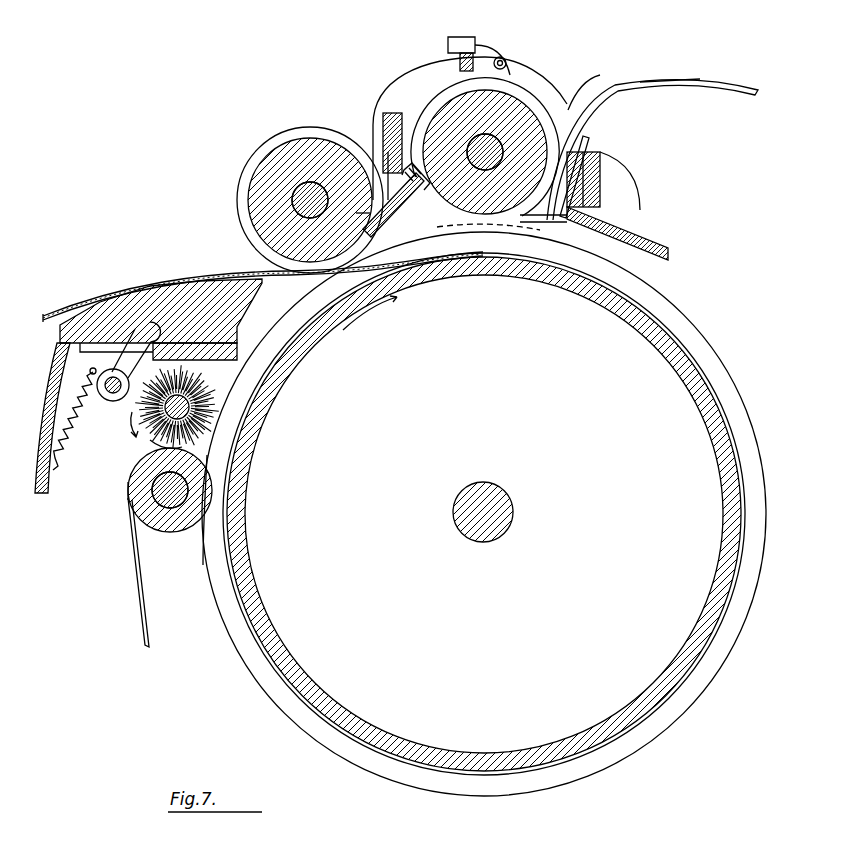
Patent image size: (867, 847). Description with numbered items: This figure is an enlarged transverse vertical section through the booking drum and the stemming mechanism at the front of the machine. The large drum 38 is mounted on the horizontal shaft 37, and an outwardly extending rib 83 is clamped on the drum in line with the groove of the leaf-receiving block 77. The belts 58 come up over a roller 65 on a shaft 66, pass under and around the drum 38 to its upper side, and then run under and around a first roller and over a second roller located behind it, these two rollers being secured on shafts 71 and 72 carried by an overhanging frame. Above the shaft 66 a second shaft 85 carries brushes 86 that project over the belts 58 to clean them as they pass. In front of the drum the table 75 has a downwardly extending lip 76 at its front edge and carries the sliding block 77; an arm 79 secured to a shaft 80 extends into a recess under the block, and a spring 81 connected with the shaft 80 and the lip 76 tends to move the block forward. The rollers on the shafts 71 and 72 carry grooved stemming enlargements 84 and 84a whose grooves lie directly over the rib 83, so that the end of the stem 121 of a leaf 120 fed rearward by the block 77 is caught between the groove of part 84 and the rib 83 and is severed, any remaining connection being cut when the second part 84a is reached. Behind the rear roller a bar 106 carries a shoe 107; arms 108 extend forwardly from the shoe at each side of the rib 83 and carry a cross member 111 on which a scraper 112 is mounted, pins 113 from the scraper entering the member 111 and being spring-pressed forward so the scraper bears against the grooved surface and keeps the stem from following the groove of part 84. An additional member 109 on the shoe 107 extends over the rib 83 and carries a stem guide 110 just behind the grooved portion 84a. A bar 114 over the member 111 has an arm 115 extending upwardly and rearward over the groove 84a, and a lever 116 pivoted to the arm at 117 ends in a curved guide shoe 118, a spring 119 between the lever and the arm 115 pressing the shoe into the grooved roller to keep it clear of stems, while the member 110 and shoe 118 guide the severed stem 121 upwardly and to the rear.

The shaft 37 is at (470, 532).
The drum 38 is at (253, 592).
The belts 58 is at (140, 605).
The roller 65 is at (168, 532).
The shaft 66 is at (128, 520).
The shaft 71 is at (292, 200).
The shaft 72 is at (491, 172).
The table 75 is at (237, 363).
The lip 76 is at (47, 477).
The block 77 is at (238, 325).
The arm 79 is at (137, 337).
The shaft 80 is at (110, 393).
The spring 81 is at (68, 432).
The rib 83 is at (228, 627).
The grooved stemming annular projecting enlargement 84 is at (205, 273).
The grooved stemming annular projecting enlargement 84a is at (575, 118).
The shaft 85 is at (200, 410).
The brushes 86 is at (200, 433).
The bar 106 is at (597, 167).
The shoe 107 is at (603, 217).
The arm 108 is at (423, 213).
The member 109 is at (555, 228).
The stem guide 110 is at (583, 142).
The cross connecting member 111 is at (403, 207).
The scraper 112 is at (360, 213).
The pins 113 is at (367, 187).
The bar 114 is at (383, 118).
The arm 115 is at (403, 70).
The lever 116 is at (528, 66).
The pivot 117 is at (505, 57).
The curved guide shoe 118 is at (592, 87).
The spring 119 is at (461, 50).
The leaf 120 is at (84, 293).
The stem 121 is at (643, 86).